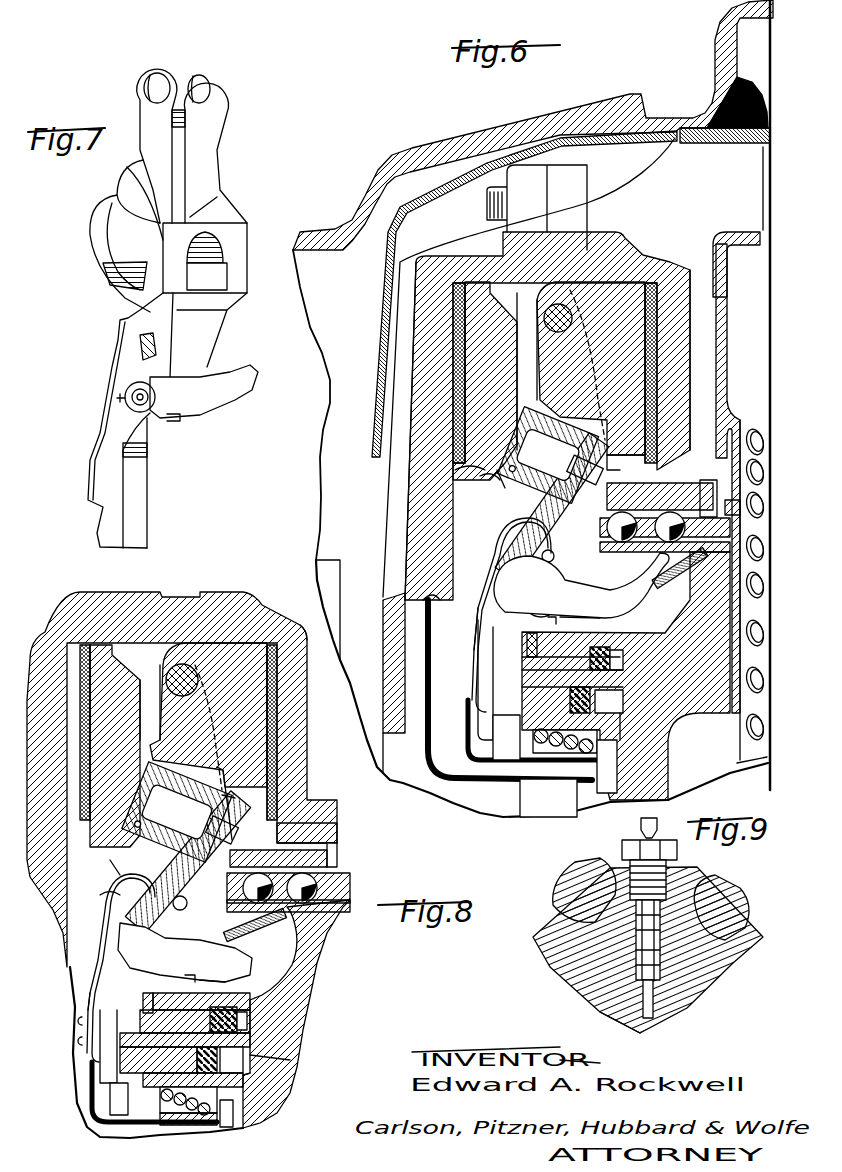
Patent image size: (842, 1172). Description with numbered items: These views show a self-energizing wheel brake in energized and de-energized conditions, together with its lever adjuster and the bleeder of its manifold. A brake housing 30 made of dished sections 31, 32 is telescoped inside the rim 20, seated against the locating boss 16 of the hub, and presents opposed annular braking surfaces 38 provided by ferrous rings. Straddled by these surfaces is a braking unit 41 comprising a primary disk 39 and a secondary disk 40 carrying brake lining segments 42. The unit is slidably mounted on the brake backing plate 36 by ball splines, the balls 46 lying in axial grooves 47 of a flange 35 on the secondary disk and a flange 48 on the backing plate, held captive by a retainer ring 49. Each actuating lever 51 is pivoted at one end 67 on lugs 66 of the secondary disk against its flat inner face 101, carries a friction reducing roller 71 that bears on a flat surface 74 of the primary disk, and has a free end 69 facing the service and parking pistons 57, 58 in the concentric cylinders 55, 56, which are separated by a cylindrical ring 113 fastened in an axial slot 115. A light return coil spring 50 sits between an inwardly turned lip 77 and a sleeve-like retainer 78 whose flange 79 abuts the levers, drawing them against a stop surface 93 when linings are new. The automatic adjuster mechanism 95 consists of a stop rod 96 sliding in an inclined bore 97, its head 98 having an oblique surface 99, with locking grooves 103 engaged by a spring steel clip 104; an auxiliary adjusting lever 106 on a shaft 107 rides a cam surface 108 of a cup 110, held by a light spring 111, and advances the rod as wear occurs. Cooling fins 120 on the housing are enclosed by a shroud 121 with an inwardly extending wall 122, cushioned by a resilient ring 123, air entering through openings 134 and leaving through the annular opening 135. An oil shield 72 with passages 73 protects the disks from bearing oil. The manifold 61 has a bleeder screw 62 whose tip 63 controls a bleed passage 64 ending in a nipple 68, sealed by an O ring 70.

In FIG. 6, the locating boss 16 is at (352, 590).
In FIG. 6, the rim 20 is at (565, 125).
In FIG. 6, the brake housing 30 is at (400, 523).
In FIG. 6, the outer housing section 31 is at (531, 255).
In FIG. 8, the outer housing section 31 is at (108, 620).
In FIG. 6, the inner housing section 32 is at (682, 265).
In FIG. 8, the inner housing section 32 is at (268, 622).
In FIG. 6, the flange 35 is at (712, 487).
In FIG. 8, the flange 35 is at (338, 848).
In FIG. 6, the brake backing plate 36 is at (740, 615).
In FIG. 8, the brake backing plate 36 is at (315, 995).
In FIG. 6, the braking surfaces 38 is at (458, 400).
In FIG. 8, the braking surfaces 38 is at (100, 850).
In FIG. 6, the primary pressure disk 39 is at (495, 318).
In FIG. 8, the primary pressure disk 39 is at (117, 676).
In FIG. 6, the secondary pressure disk 40 is at (640, 425).
In FIG. 8, the secondary pressure disk 40 is at (218, 660).
In FIG. 6, the braking unit 41 is at (475, 484).
In FIG. 8, the braking unit 41 is at (118, 905).
In FIG. 6, the brake lining segments 42 is at (458, 383).
In FIG. 8, the brake lining segments 42 is at (86, 768).
In FIG. 6, the balls 46 is at (665, 552).
In FIG. 8, the balls 46 is at (340, 859).
In FIG. 6, the axial grooves 47 is at (718, 510).
In FIG. 8, the axial grooves 47 is at (351, 880).
In FIG. 6, the backing plate flange 48 is at (670, 590).
In FIG. 6, the retainer ring 49 is at (738, 530).
In FIG. 6, the return coil spring 50 is at (617, 762).
In FIG. 8, the return coil spring 50 is at (185, 1113).
In FIG. 6, the actuating levers 51 is at (596, 365).
In FIG. 7, the actuating levers 51 is at (240, 169).
In FIG. 8, the actuating levers 51 is at (162, 727).
In FIG. 6, the service hydraulic cylinder 55 is at (620, 735).
In FIG. 8, the service hydraulic cylinder 55 is at (285, 1075).
In FIG. 6, the emergency hydraulic cylinder 56 is at (623, 652).
In FIG. 8, the emergency hydraulic cylinder 56 is at (247, 1012).
In FIG. 6, the service brake piston 57 is at (506, 737).
In FIG. 8, the service brake piston 57 is at (175, 1094).
In FIG. 6, the parking brake piston 58 is at (520, 645).
In FIG. 8, the parking brake piston 58 is at (186, 1002).
In FIG. 9, the manifold 61 is at (750, 930).
In FIG. 9, the bleeder screw 62 is at (690, 877).
In FIG. 9, the screw tip 63 is at (600, 1015).
In FIG. 9, the bleed passage 64 is at (623, 851).
In FIG. 6, the lugs 66 is at (572, 296).
In FIG. 6, the pivoted lever end 67 is at (526, 371).
In FIG. 7, the pivoted lever end 67 is at (178, 125).
In FIG. 8, the pivoted lever end 67 is at (172, 748).
In FIG. 9, the nipple 68 is at (640, 829).
In FIG. 6, the free lever ends 69 is at (492, 690).
In FIG. 7, the free lever ends 69 is at (135, 505).
In FIG. 8, the free lever ends 69 is at (108, 1052).
In FIG. 9, the O ring 70 is at (578, 980).
In FIG. 6, the friction reducing roller 71 is at (520, 447).
In FIG. 7, the friction reducing roller 71 is at (106, 243).
In FIG. 8, the friction reducing roller 71 is at (136, 807).
In FIG. 6, the oil shield 72 is at (422, 660).
In FIG. 6, the passages 73 is at (395, 605).
In FIG. 6, the flat surface 74 is at (482, 492).
In FIG. 8, the flat surface 74 is at (110, 887).
In FIG. 6, the inwardly turned lip 77 is at (548, 798).
In FIG. 8, the inwardly turned lip 77 is at (123, 1122).
In FIG. 6, the sleeve-like retainer 78 is at (498, 781).
In FIG. 8, the sleeve-like retainer 78 is at (95, 1122).
In FIG. 6, the retainer flange 79 is at (470, 727).
In FIG. 8, the retainer flange 79 is at (89, 1078).
In FIG. 6, the stop surface 93 is at (617, 750).
In FIG. 8, the stop surface 93 is at (205, 1113).
In FIG. 6, the automatic adjuster mechanism 95 is at (512, 540).
In FIG. 8, the automatic adjuster mechanism 95 is at (83, 978).
In FIG. 6, the stop rod 96 is at (549, 560).
In FIG. 8, the stop rod 96 is at (181, 904).
In FIG. 6, the inclined cylindrical bore 97 is at (552, 507).
In FIG. 8, the inclined cylindrical bore 97 is at (195, 862).
In FIG. 6, the stop rod head 98 is at (590, 478).
In FIG. 7, the stop rod head 98 is at (214, 260).
In FIG. 8, the stop rod head 98 is at (230, 826).
In FIG. 6, the oblique surface 99 is at (620, 458).
In FIG. 7, the oblique surface 99 is at (223, 272).
In FIG. 8, the oblique surface 99 is at (240, 803).
In FIG. 6, the flat inner face 101 is at (660, 496).
In FIG. 8, the flat inner face 101 is at (237, 795).
In FIG. 6, the locking grooves 103 is at (528, 552).
In FIG. 7, the locking grooves 103 is at (143, 345).
In FIG. 8, the locking grooves 103 is at (118, 930).
In FIG. 6, the spring steel clip 104 is at (525, 567).
In FIG. 7, the spring steel clip 104 is at (112, 366).
In FIG. 8, the spring steel clip 104 is at (112, 952).
In FIG. 6, the auxiliary adjusting lever 106 is at (648, 598).
In FIG. 7, the auxiliary adjusting lever 106 is at (219, 402).
In FIG. 8, the auxiliary adjusting lever 106 is at (245, 975).
In FIG. 6, the shaft 107 is at (558, 603).
In FIG. 7, the shaft 107 is at (125, 392).
In FIG. 8, the shaft 107 is at (178, 948).
In FIG. 6, the cam surface 108 is at (592, 625).
In FIG. 8, the cam surface 108 is at (218, 967).
In FIG. 6, the cup 110 is at (695, 560).
In FIG. 8, the cup 110 is at (315, 930).
In FIG. 6, the light spring 111 is at (566, 625).
In FIG. 7, the light spring 111 is at (179, 432).
In FIG. 8, the light spring 111 is at (201, 983).
In FIG. 6, the cylindrical ring 113 is at (599, 700).
In FIG. 8, the cylindrical ring 113 is at (164, 1044).
In FIG. 8, the axial slot 115 is at (290, 1060).
In FIG. 6, the fins 120 is at (755, 202).
In FIG. 6, the shroud 121 is at (771, 138).
In FIG. 6, the inwardly extending wall 122 is at (385, 390).
In FIG. 6, the resilient ring 123 is at (762, 106).
In FIG. 6, the cooling air openings 134 is at (763, 645).
In FIG. 6, the annular opening 135 is at (779, 174).